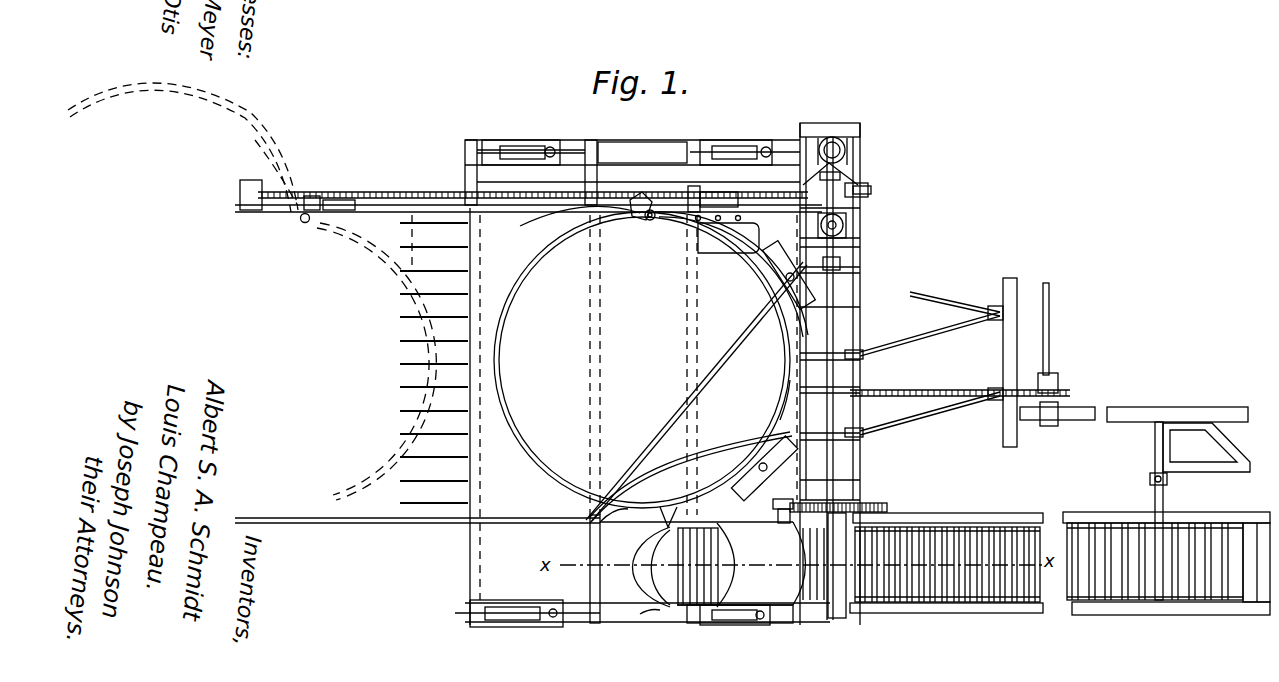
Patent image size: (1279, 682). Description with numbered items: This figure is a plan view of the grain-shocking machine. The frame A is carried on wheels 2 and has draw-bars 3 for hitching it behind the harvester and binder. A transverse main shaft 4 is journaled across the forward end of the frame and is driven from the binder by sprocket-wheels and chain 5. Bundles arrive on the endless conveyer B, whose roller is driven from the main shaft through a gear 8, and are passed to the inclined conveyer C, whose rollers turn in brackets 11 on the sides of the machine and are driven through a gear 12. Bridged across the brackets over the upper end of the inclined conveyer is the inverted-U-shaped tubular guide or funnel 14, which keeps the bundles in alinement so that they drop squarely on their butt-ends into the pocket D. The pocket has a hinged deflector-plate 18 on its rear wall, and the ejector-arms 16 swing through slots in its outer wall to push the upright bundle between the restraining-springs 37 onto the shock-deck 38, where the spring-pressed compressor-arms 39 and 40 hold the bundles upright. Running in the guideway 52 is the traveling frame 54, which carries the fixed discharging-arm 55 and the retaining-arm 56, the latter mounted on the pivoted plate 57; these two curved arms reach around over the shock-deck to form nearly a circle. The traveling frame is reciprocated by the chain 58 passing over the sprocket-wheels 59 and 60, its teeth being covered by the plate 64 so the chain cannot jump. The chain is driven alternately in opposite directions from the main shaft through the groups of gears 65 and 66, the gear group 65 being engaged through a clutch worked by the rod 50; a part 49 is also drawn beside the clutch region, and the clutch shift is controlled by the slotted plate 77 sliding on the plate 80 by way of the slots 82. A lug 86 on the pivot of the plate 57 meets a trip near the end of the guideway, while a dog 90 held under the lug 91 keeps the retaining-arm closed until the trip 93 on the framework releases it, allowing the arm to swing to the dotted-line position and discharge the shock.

The wheels 2 is at (500, 142).
The draw-bars 3 is at (935, 298).
The main shaft 4 is at (835, 322).
The sprocket-wheels and chain 5 is at (927, 386).
The gear 8 is at (878, 504).
The brackets 11 is at (805, 614).
The gear 12 is at (830, 505).
The inverted-U-shaped tubular guide or funnel 14 is at (703, 564).
The ejector-arms 16 is at (655, 614).
The deflector-plate 18 is at (664, 566).
The restraining-springs 37 is at (638, 509).
The shock-deck 38 is at (642, 360).
The compressor-arm 39 is at (688, 466).
The compressor-arm 40 is at (658, 440).
The bracket 49 is at (773, 505).
The rod 50 is at (790, 397).
The guideway 52 is at (512, 210).
The traveling frame 54 is at (355, 228).
The discharging-arm 55 is at (382, 470).
The retaining-arm 56 is at (158, 88).
The plate 57 is at (290, 168).
The chain 58 is at (423, 197).
The sprocket-wheel 59 is at (872, 192).
The sprocket-wheel 60 is at (238, 194).
The plate 64 is at (728, 193).
The gearing 65 is at (845, 225).
The gearing 66 is at (847, 148).
The plate 77 is at (845, 176).
The plate 80 is at (870, 186).
The slots 82 is at (860, 178).
The lug 86 is at (310, 196).
The dog 90 is at (694, 188).
The lug 91 is at (304, 225).
The trip 93 is at (347, 200).
The frame A is at (650, 142).
The endless conveyer B is at (997, 540).
The inclined conveyer C is at (814, 600).
The pocket D is at (653, 567).